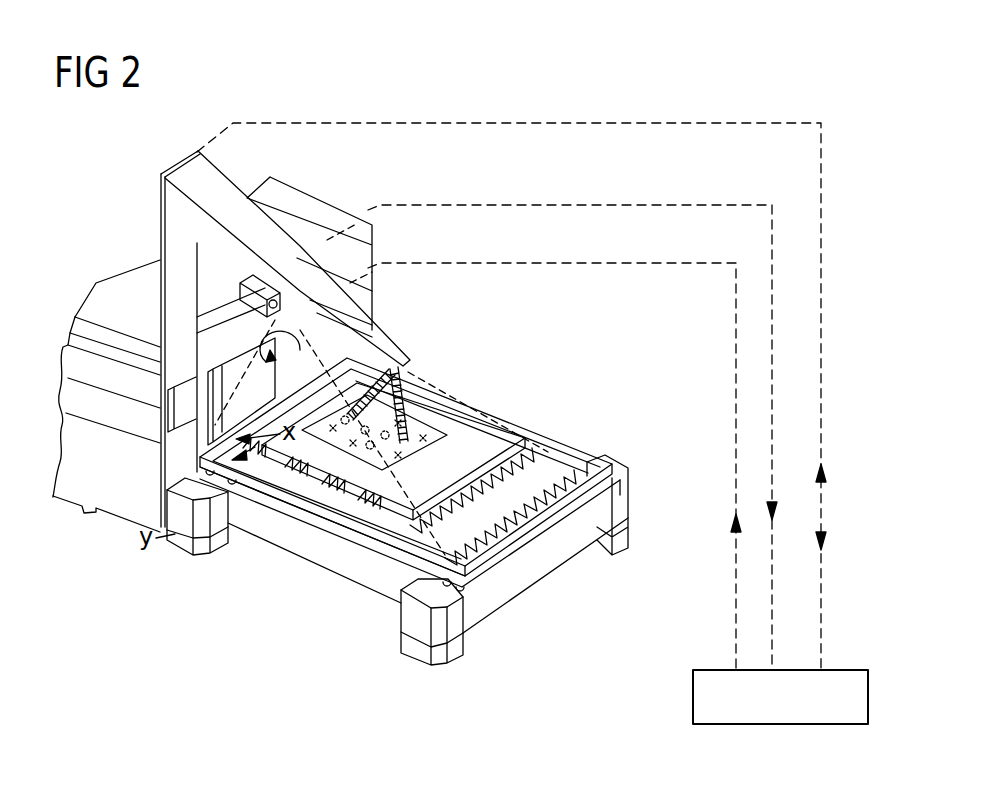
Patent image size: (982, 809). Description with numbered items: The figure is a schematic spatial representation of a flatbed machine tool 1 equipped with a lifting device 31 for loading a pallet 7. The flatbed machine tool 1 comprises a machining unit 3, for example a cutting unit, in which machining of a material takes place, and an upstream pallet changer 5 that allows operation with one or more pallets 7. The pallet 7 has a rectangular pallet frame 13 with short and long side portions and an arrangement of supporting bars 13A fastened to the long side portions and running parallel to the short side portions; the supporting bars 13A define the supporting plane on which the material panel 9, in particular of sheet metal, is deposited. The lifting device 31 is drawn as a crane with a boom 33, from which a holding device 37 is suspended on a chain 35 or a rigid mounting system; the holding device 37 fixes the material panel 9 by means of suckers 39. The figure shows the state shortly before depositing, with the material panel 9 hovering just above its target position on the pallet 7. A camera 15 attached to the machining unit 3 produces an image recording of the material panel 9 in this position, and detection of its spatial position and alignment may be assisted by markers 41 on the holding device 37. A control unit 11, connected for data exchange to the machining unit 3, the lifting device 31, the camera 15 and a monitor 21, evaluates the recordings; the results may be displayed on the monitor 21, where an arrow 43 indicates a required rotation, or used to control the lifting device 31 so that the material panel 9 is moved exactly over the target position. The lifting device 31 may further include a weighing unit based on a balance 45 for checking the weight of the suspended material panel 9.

The flatbed machine tool 1 is at (553, 233).
The machining unit 3 is at (150, 280).
The pallet changer 5 is at (373, 583).
The pallet 7 is at (330, 460).
The material panel 9 is at (278, 465).
The control unit 11 is at (845, 670).
The pallet frame 13 is at (548, 520).
The supporting bars 13A is at (535, 458).
The camera 15 is at (275, 277).
The monitor 21 is at (170, 467).
The lifting device 31 is at (173, 310).
The boom 33 is at (268, 238).
The chain 35 is at (415, 393).
The holding device 37 is at (463, 440).
The suckers 39 is at (337, 458).
The markers 41 is at (433, 430).
The arrow 43 is at (260, 333).
The balance 45 is at (160, 417).